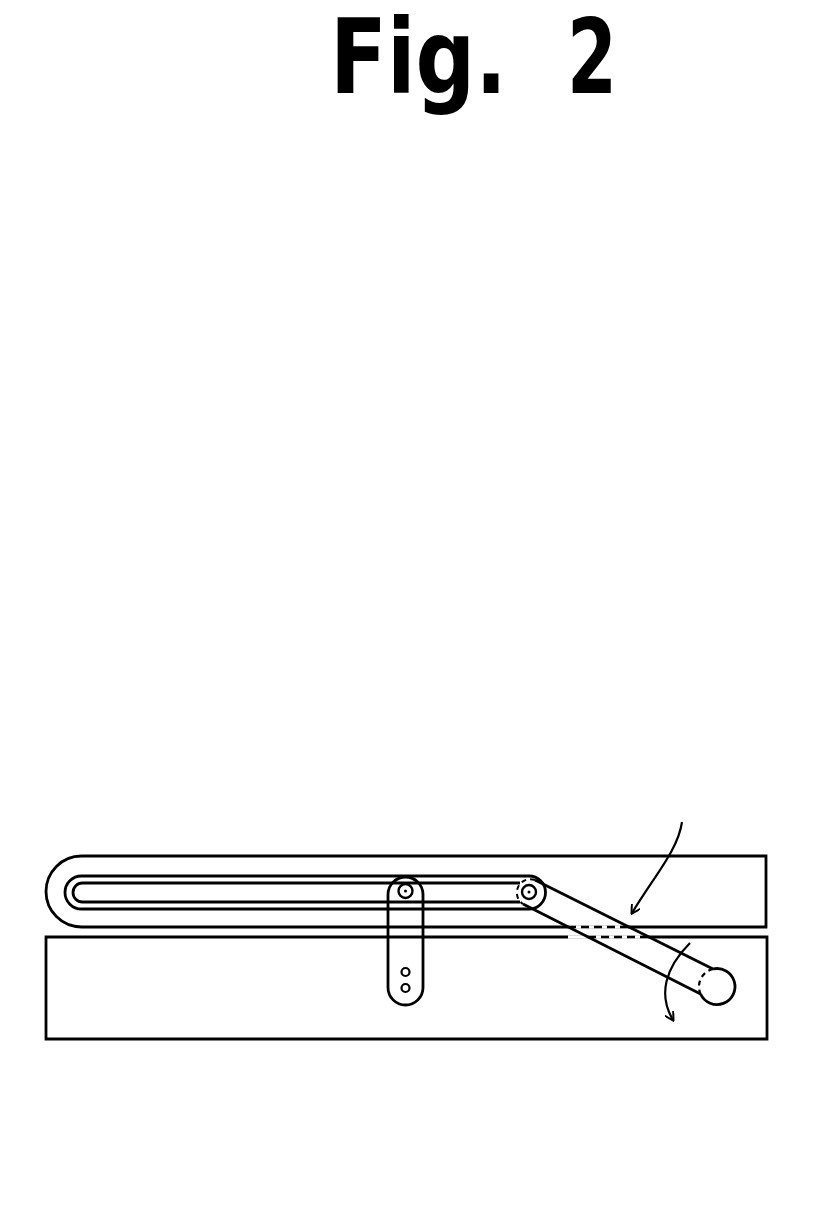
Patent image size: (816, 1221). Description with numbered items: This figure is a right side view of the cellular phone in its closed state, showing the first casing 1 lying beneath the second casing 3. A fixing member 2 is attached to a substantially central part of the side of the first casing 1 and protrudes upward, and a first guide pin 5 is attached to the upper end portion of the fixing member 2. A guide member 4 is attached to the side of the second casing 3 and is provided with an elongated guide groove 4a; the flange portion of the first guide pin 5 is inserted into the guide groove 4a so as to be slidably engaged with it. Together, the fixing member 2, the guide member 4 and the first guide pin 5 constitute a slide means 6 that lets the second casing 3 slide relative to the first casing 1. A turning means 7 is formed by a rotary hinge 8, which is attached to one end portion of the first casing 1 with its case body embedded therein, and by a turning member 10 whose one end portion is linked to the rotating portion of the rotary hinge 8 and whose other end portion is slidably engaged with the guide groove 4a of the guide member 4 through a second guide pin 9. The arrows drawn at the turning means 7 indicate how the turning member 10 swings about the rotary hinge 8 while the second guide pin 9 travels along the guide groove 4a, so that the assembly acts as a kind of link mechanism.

The first casing 1 is at (352, 1018).
The fixing member 2 is at (417, 955).
The second casing 3 is at (137, 855).
The guide member 4 is at (207, 862).
The guide groove 4a is at (181, 894).
The first guide pin 5 is at (406, 884).
The slide means 6 is at (378, 914).
The turning means 7 is at (695, 813).
The rotary hinge 8 is at (727, 1006).
The second guide pin 9 is at (529, 885).
The turning member 10 is at (630, 953).